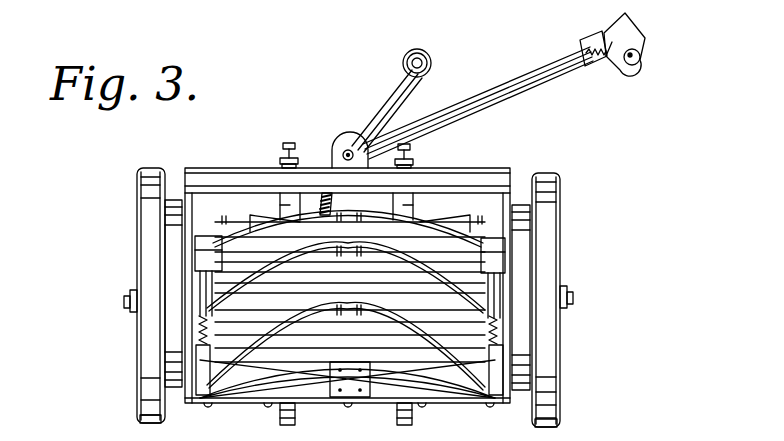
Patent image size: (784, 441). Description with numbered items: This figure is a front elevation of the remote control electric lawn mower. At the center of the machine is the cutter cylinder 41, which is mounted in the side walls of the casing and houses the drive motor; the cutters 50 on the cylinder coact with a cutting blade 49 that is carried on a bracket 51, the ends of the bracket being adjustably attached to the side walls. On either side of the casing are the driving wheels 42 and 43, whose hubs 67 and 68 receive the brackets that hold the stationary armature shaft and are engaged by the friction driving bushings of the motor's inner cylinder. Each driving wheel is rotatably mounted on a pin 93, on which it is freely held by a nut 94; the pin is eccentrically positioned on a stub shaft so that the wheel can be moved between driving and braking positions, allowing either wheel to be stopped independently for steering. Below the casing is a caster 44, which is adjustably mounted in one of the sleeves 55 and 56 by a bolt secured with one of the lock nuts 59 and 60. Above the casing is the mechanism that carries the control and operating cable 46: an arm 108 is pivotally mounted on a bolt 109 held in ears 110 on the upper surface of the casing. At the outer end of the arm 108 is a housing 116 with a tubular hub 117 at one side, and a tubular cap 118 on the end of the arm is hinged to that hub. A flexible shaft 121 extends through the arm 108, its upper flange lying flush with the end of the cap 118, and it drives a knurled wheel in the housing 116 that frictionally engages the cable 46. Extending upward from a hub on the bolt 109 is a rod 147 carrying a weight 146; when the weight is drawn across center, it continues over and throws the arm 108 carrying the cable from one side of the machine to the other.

The cutter cylinder 41 is at (452, 397).
The driving wheel 42 is at (560, 392).
The driving wheel 43 is at (146, 389).
The caster 44 is at (407, 425).
The control and operating cable 46 is at (292, 425).
The cutting blade 49 is at (230, 405).
The cutters 50 is at (440, 282).
The bracket 51 is at (196, 400).
The sleeve 55 is at (413, 207).
The sleeve 56 is at (280, 207).
The lock nut 59 is at (413, 162).
The lock nut 60 is at (280, 160).
The hub 67 is at (520, 205).
The hub 68 is at (173, 200).
The pin 93 is at (130, 296).
The nut 94 is at (128, 306).
The arm 108 is at (535, 76).
The bolt 109 is at (349, 146).
The ears 110 is at (338, 143).
The housing 116 is at (633, 40).
The tubular hub 117 is at (610, 56).
The tubular cap 118 is at (588, 40).
The flexible shaft 121 is at (331, 208).
The weight 146 is at (430, 58).
The rod 147 is at (390, 90).